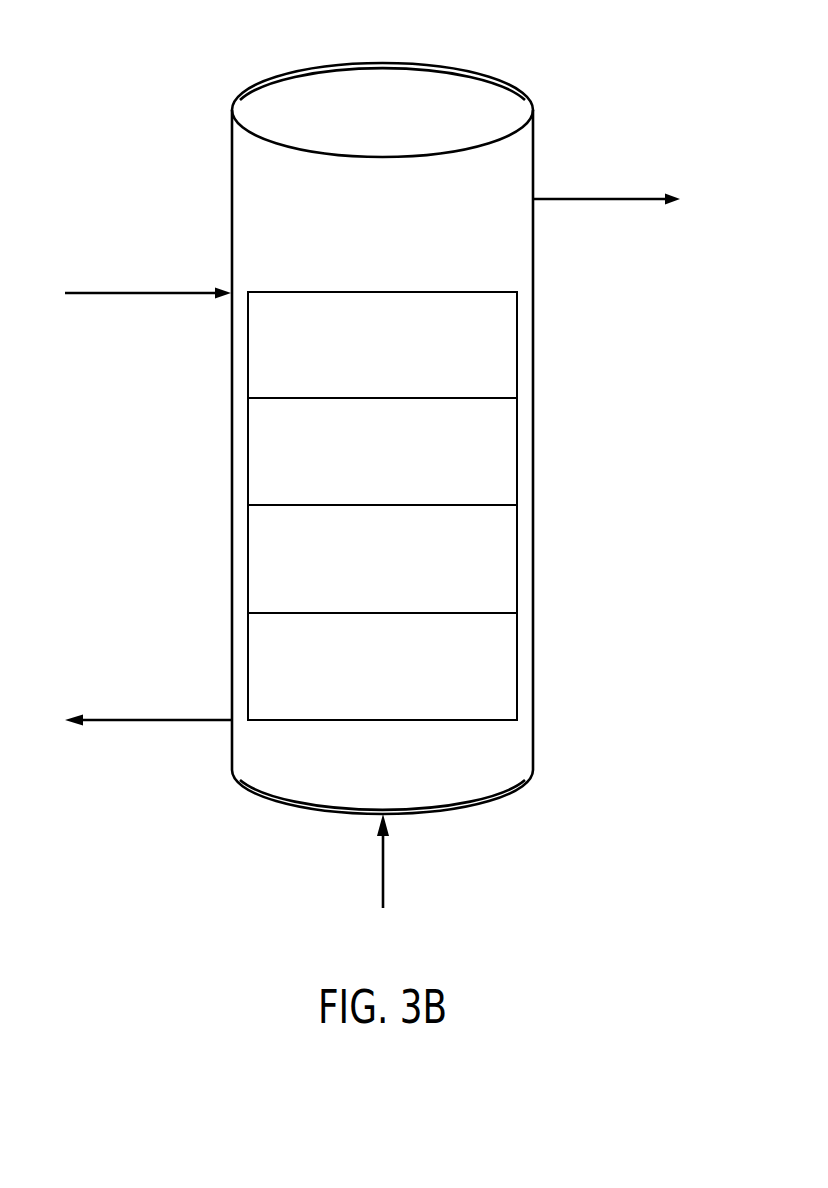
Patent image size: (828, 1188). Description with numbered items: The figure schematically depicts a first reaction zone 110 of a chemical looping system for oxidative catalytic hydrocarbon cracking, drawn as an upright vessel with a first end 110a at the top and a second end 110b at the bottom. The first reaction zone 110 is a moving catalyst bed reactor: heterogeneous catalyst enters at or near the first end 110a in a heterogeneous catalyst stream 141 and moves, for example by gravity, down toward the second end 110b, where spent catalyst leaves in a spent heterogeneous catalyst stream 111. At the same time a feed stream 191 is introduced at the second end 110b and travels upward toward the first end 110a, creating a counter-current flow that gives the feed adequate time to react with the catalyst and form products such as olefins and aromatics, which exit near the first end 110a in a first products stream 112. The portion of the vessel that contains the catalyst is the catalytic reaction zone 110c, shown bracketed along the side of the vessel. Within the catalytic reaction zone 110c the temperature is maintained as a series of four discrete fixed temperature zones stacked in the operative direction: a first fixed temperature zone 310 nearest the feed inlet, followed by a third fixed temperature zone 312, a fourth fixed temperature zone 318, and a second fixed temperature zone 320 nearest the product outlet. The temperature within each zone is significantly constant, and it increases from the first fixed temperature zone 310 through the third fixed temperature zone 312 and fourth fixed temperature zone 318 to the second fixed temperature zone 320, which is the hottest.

The first reaction zone 110 is at (533, 493).
The first end 110a is at (384, 83).
The second end 110b is at (250, 790).
The catalytic reaction zone 110c is at (230, 293).
The spent heterogeneous catalyst stream 111 is at (138, 718).
The first products stream 112 is at (588, 197).
The heterogeneous catalyst stream 141 is at (137, 297).
The feed stream 191 is at (383, 865).
The first fixed temperature zone 310 is at (396, 679).
The third fixed temperature zone 312 is at (396, 572).
The fourth fixed temperature zone 318 is at (396, 465).
The second fixed temperature zone 320 is at (396, 358).